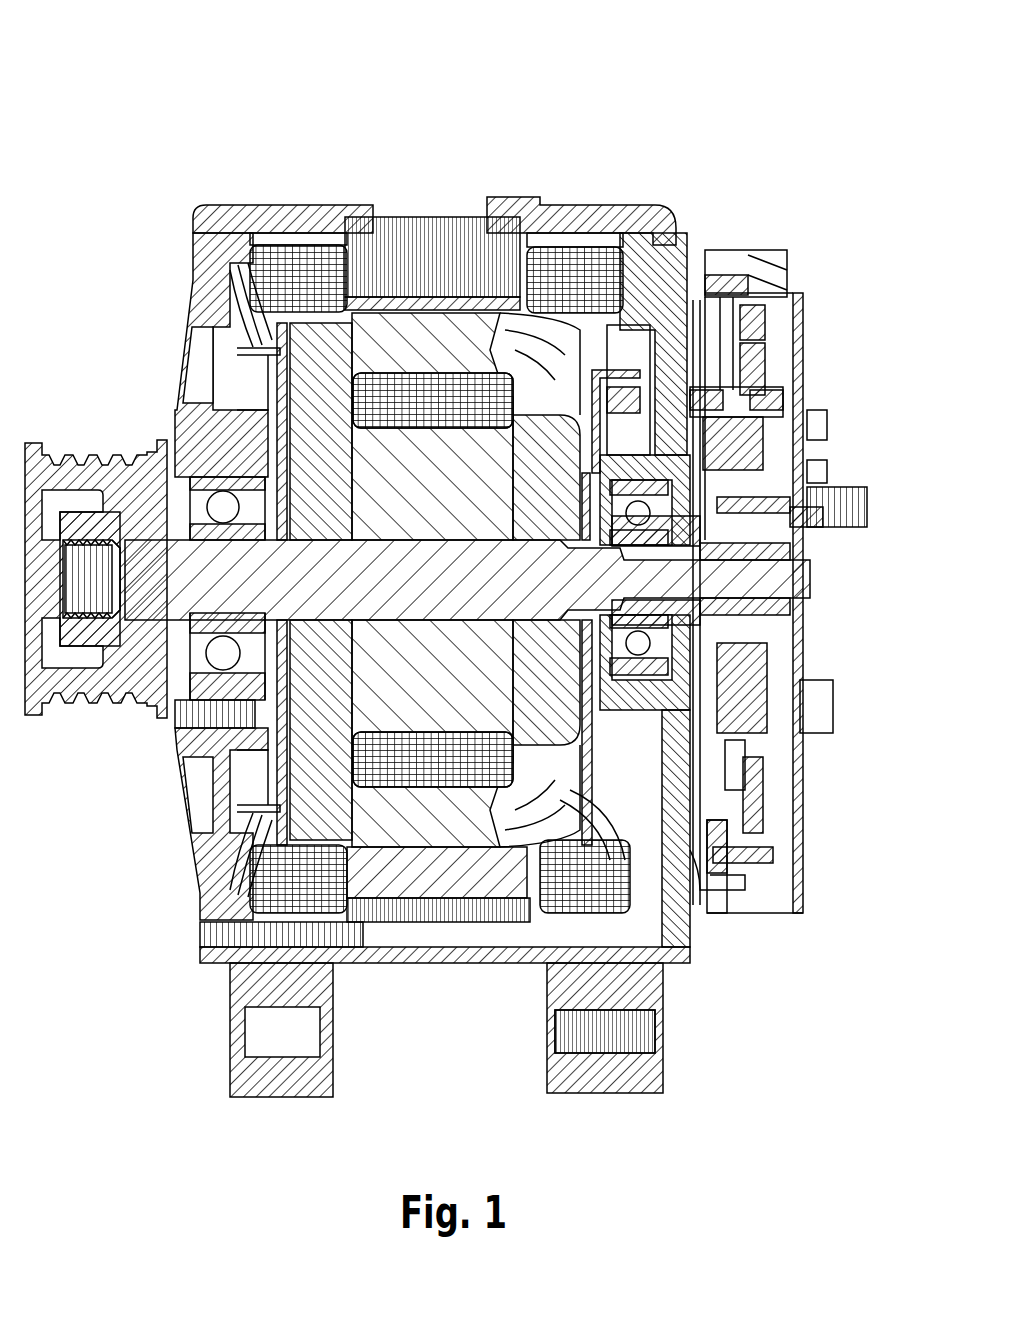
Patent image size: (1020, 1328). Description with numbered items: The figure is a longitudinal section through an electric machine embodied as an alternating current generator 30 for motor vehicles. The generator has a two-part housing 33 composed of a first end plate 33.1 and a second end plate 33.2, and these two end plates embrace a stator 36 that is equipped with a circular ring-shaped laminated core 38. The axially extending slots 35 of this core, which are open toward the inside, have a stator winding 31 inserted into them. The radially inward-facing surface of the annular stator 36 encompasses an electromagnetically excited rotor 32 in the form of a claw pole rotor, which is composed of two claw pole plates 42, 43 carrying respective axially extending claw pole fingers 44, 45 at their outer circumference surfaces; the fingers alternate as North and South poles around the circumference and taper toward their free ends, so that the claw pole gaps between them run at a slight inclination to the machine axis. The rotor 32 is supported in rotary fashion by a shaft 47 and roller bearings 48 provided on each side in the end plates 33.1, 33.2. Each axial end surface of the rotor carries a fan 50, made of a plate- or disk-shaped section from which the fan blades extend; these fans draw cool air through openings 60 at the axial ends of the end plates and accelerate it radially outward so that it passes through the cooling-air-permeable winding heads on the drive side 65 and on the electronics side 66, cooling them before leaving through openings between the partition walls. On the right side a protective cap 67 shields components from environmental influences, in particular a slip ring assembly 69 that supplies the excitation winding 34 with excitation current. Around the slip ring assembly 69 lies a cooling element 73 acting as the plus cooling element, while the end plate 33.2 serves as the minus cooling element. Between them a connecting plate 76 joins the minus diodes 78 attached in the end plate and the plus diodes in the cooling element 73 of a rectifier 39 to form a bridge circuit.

The alternating current generator 30 is at (732, 94).
The stator winding 31 is at (528, 205).
The rotor 32 is at (284, 826).
The housing 33 is at (193, 186).
The first end plate 33.1 is at (237, 205).
The second end plate 33.2 is at (640, 210).
The excitation winding 34 is at (430, 870).
The slots 35 is at (455, 895).
The stator 36 is at (436, 190).
The laminated core 38 is at (393, 215).
The rectifier 39 is at (830, 902).
The claw pole plate 42 is at (152, 603).
The claw pole plate 43 is at (730, 747).
The claw pole fingers 44 is at (427, 333).
The claw pole fingers 45 is at (537, 360).
The shaft 47 is at (108, 680).
The roller bearings 48 is at (217, 500).
The fan 50 is at (197, 342).
The openings 60 is at (200, 392).
The drive side 65 is at (296, 208).
The electronics side 66 is at (595, 207).
The protective cap 67 is at (800, 800).
The slip ring assembly 69 is at (788, 622).
The cooling element 73 is at (753, 368).
The connecting plate 76 is at (727, 773).
The minus diodes 78 is at (700, 863).